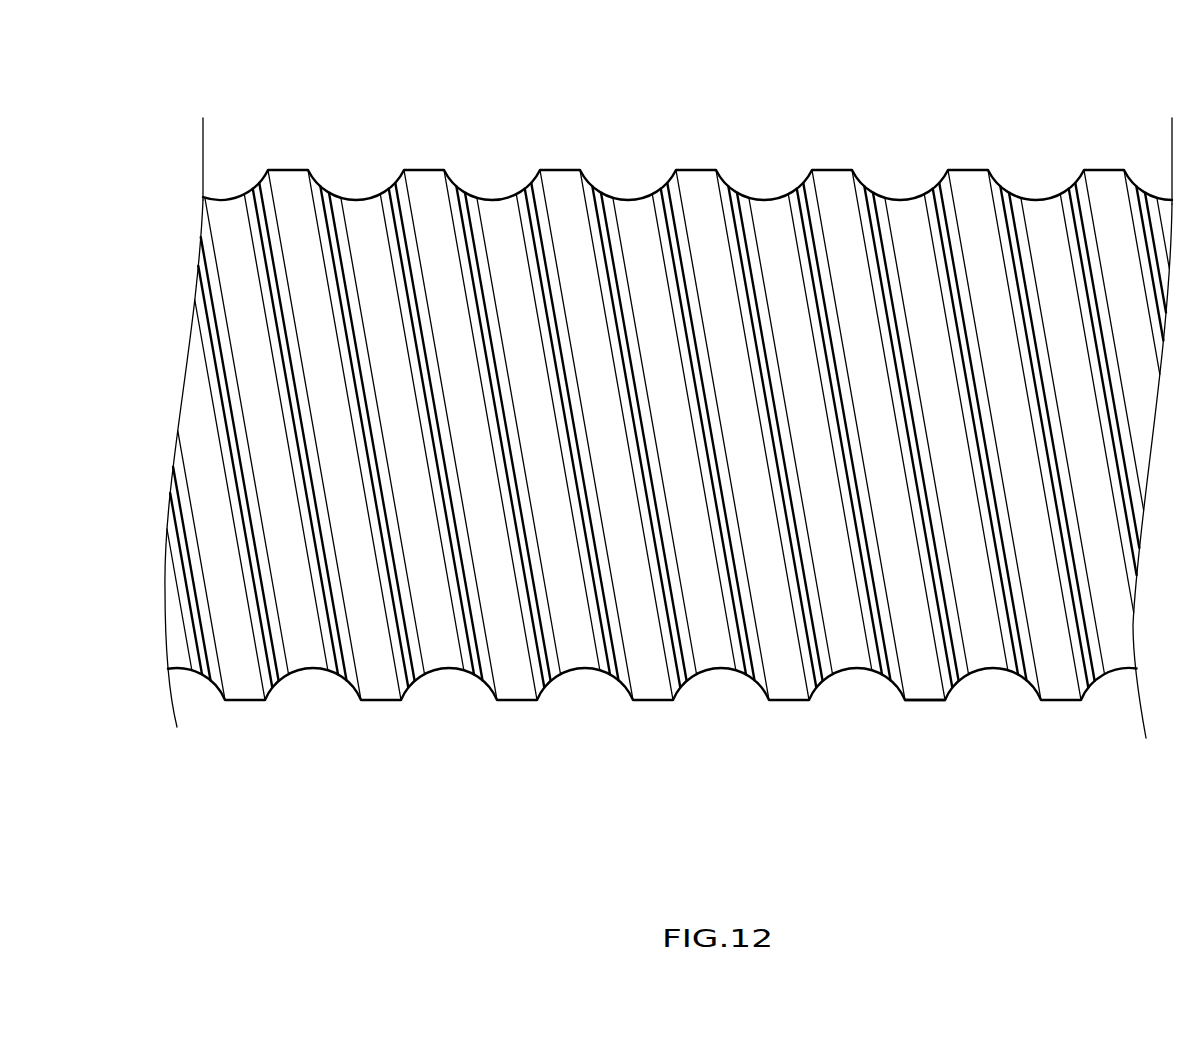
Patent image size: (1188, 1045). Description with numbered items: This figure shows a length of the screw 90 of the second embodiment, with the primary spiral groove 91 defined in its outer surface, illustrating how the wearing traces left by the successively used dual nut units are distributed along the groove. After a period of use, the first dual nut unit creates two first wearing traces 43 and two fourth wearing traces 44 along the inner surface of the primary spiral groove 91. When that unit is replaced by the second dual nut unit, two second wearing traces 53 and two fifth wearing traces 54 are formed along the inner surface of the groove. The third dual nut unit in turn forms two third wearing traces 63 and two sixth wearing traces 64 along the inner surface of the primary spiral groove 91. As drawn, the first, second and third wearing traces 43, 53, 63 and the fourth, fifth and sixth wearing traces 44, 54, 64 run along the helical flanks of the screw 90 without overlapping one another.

The first wearing trace 43 is at (493, 297).
The fourth wearing trace 44 is at (585, 590).
The second wearing trace 53 is at (480, 253).
The fifth wearing trace 54 is at (602, 633).
The third wearing trace 63 is at (482, 247).
The sixth wearing trace 64 is at (617, 653).
The screw 90 is at (922, 673).
The primary spiral groove 91 is at (548, 505).